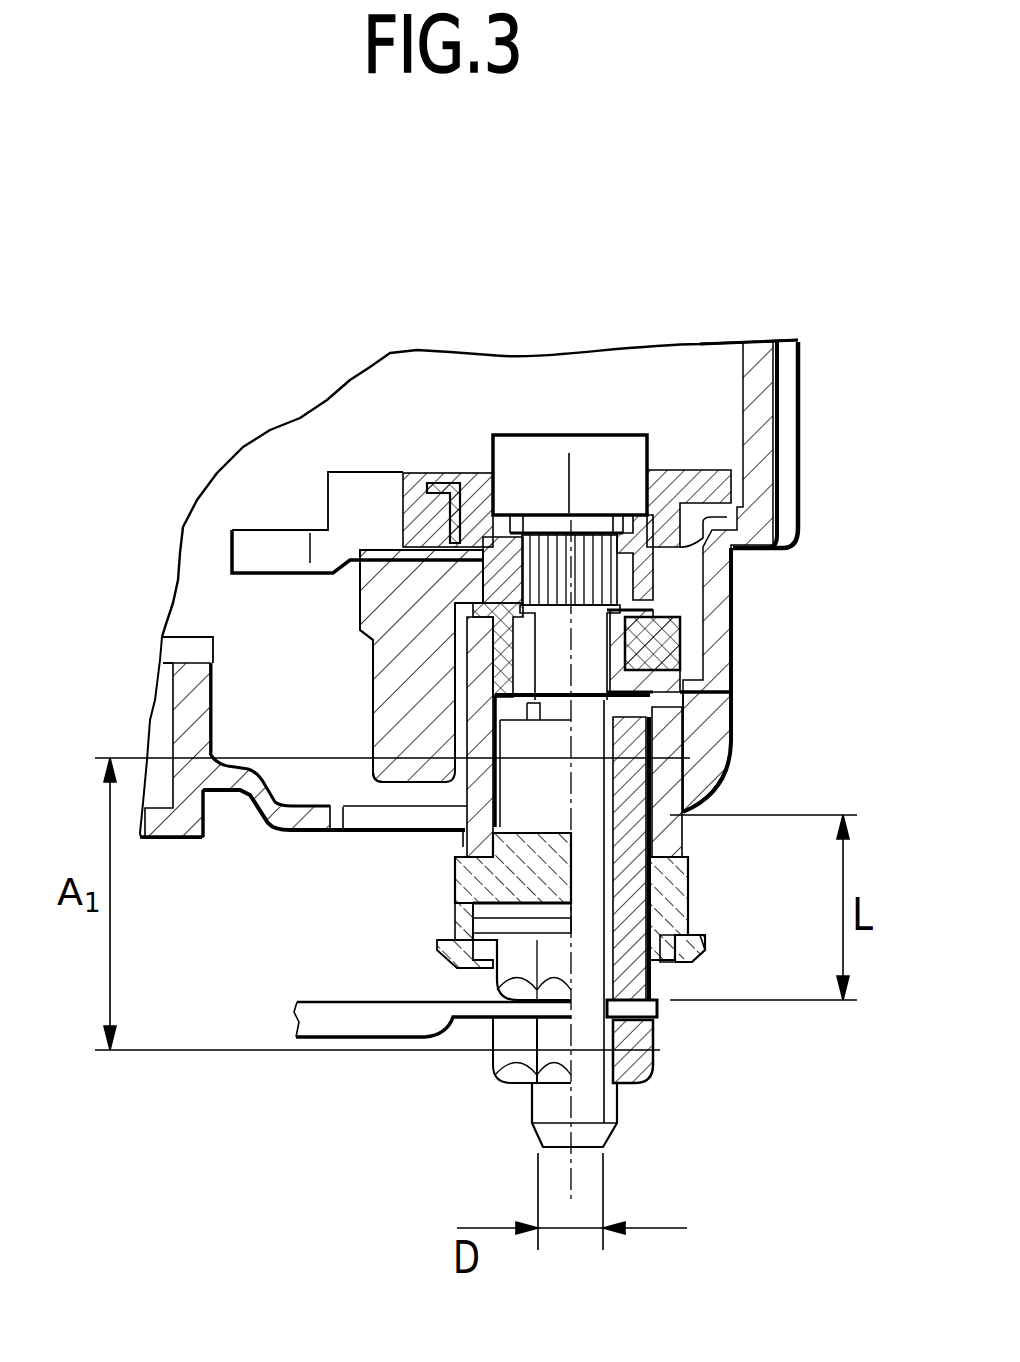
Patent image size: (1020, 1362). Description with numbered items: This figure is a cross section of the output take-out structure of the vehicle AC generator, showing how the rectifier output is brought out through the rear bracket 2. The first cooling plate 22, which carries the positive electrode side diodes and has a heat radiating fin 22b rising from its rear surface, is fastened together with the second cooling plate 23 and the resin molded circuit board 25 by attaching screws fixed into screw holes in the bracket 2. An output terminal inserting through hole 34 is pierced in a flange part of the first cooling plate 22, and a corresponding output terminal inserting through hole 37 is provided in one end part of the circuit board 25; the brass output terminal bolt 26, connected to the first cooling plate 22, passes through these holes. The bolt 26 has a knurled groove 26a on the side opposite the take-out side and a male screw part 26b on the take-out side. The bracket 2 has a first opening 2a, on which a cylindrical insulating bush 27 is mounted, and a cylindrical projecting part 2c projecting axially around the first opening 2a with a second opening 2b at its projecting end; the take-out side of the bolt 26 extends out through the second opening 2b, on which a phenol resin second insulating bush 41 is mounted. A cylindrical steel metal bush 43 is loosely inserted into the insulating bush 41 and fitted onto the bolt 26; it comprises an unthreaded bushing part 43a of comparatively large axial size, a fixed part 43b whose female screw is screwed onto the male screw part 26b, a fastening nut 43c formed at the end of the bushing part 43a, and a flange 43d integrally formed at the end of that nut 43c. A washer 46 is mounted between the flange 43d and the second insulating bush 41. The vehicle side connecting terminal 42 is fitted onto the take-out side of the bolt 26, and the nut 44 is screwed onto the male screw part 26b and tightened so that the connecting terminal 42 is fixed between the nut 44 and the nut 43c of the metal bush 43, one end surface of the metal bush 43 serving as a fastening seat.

The bracket 2 is at (763, 347).
The first opening 2a is at (727, 690).
The second opening 2b is at (470, 828).
The cylindrical projecting part 2c is at (480, 703).
The first cooling plate 22 is at (660, 572).
The heat radiating fin 22b is at (385, 658).
The second cooling plate 23 is at (670, 652).
The circuit board 25 is at (472, 472).
The output terminal bolt 26 is at (646, 740).
The knurled groove 26a is at (562, 513).
The male screw part 26b is at (683, 805).
The insulating bush 27 is at (663, 608).
The output terminal inserting through hole 34 is at (490, 583).
The output terminal inserting through hole 37 is at (598, 513).
The second insulating bush 41 is at (470, 873).
The connecting terminal 42 is at (297, 1013).
The metal bush 43 is at (593, 849).
The bushing part 43a is at (672, 878).
The fixed part 43b is at (650, 740).
The fastening nut 43c is at (512, 982).
The flange 43d is at (708, 948).
The nut 44 is at (650, 1082).
The washer 46 is at (455, 943).